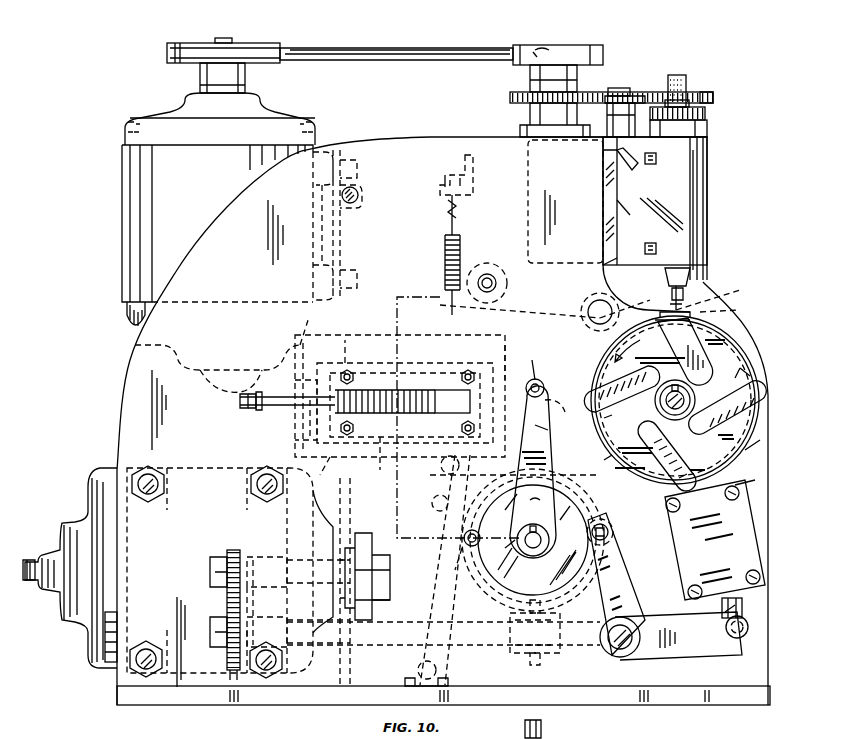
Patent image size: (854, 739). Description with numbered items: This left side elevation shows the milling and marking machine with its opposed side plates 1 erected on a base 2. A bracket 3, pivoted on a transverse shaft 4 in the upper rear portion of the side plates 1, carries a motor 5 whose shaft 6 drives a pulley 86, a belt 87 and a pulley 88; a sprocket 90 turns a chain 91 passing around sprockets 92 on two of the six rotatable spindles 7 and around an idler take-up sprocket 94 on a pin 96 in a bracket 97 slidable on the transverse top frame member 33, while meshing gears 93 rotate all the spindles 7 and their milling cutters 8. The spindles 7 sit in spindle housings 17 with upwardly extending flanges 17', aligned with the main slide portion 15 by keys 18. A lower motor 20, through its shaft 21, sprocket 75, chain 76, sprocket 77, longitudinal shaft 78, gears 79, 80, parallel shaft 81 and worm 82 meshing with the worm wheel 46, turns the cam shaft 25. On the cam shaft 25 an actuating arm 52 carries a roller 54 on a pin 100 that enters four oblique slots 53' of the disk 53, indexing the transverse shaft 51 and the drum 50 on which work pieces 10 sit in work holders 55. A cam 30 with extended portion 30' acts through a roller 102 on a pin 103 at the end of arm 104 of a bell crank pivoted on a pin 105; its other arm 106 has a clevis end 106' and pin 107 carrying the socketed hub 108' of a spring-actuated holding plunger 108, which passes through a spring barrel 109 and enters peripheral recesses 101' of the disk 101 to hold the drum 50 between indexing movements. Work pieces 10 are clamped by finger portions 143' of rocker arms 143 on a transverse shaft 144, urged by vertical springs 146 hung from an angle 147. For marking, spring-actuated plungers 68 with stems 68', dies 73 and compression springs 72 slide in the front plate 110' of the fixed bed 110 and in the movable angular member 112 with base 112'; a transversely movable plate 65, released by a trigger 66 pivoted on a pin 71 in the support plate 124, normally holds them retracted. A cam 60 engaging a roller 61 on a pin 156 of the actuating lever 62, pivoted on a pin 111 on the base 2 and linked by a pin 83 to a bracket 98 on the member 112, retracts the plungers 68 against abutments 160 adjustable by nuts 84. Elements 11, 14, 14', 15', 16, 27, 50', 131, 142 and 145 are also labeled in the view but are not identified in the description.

The side plates 1 is at (138, 365).
The base 2 is at (145, 700).
The bracket 3 is at (342, 235).
The transverse shaft 4 is at (360, 190).
The motor 5 is at (122, 183).
The shaft 6 is at (217, 38).
The rotatable spindles 7 is at (680, 75).
The milling cutters 8 is at (686, 306).
The work pieces 10 is at (700, 312).
The pawl 11 is at (684, 348).
The plate 14 is at (572, 201).
The plate edge 14' is at (594, 207).
The main slide portion 15 is at (691, 214).
The slot edge 15' is at (604, 217).
The lug 16 is at (630, 172).
The spindle housings 17 is at (409, 273).
The upwardly-extending flanges 17' is at (704, 129).
The keys 18 is at (657, 158).
The motor 20 is at (75, 627).
The shaft 21 is at (28, 580).
The cam shaft 25 is at (530, 556).
The nut 27 is at (690, 100).
The cam 30 is at (540, 532).
The extended portion of cam 30' is at (548, 540).
The transverse top frame member 33 is at (588, 138).
The worm wheel 46 is at (443, 621).
The drum 50 is at (680, 400).
The disc edge 50' is at (733, 302).
The transverse shaft 51 is at (690, 400).
The actuating arm 52 is at (548, 440).
The disk 53 is at (684, 415).
The slots 53' is at (672, 401).
The roller 54 is at (545, 382).
The work holders 55 is at (740, 290).
The cam 60 is at (460, 512).
The roller 61 is at (446, 569).
The actuating lever 62 is at (448, 500).
The transversely movable plate 65 is at (485, 365).
The trigger 66 is at (548, 432).
The spring-actuated marking plungers 68 is at (400, 385).
The rear stem portions 68' is at (282, 411).
The pin 71 is at (480, 500).
The compression springs 72 is at (372, 392).
The die members 73 is at (561, 406).
The sprocket 75 is at (372, 604).
The chain 76 is at (378, 558).
The sprocket 77 is at (368, 533).
The longitudinal shaft 78 is at (290, 560).
The gear 79 is at (232, 553).
The gear 80 is at (225, 660).
The parallel longitudinal shaft 81 is at (370, 658).
The worm 82 is at (530, 656).
The pin 83 is at (440, 468).
The nuts 84 is at (240, 402).
The pulley 86 is at (262, 45).
The belt 87 is at (386, 52).
The pulley 88 is at (598, 47).
The sprocket 90 is at (510, 96).
The chain 91 is at (598, 93).
The sprockets 92 is at (713, 96).
The gear 93 is at (706, 112).
The idler take-up sprocket 94 is at (640, 93).
The pin 96 is at (625, 90).
The bracket 97 is at (607, 112).
The bracket 98 is at (447, 411).
The pin 100 is at (534, 359).
The disk 101 is at (735, 420).
The peripheral recesses 101' is at (752, 465).
The roller 102 is at (610, 525).
The pin 103 is at (612, 535).
The arm 104 is at (615, 582).
The pin 105 is at (622, 658).
The arm 106 is at (678, 626).
The clevis end portion 106' is at (744, 642).
The pin 107 is at (725, 620).
The spring-actuated holding plunger 108 is at (718, 539).
The socketed hub portion 108' is at (701, 636).
The spring barrel 109 is at (735, 535).
The fixed bed member 110 is at (418, 417).
The front plate 110' is at (482, 343).
The pin 111 is at (432, 666).
The angular member 112 is at (372, 400).
The base portion 112' is at (339, 469).
The transverse support plate 124 is at (521, 353).
The clip 131 is at (542, 724).
The screw 142 is at (495, 275).
The rocker arms 143 is at (520, 299).
The clamping finger portions 143' is at (625, 300).
The transverse shaft 144 is at (595, 300).
The bearing 145 is at (478, 265).
The vertical springs 146 is at (445, 262).
The angle 147 is at (475, 185).
The pin 156 is at (462, 540).
The fixed abutments 160 is at (252, 410).